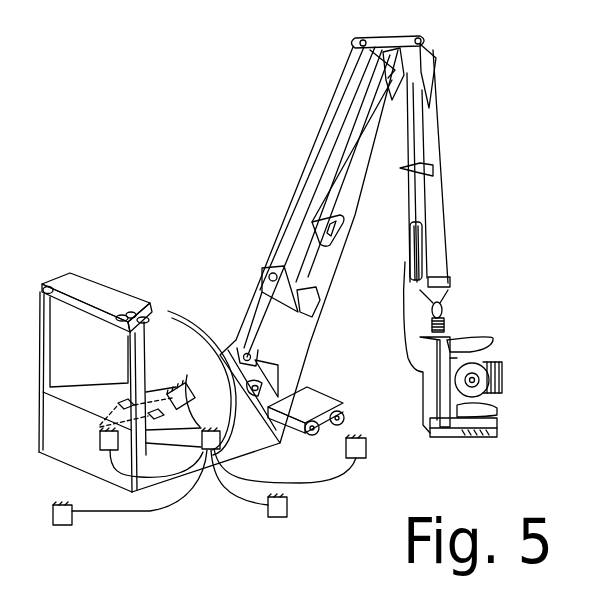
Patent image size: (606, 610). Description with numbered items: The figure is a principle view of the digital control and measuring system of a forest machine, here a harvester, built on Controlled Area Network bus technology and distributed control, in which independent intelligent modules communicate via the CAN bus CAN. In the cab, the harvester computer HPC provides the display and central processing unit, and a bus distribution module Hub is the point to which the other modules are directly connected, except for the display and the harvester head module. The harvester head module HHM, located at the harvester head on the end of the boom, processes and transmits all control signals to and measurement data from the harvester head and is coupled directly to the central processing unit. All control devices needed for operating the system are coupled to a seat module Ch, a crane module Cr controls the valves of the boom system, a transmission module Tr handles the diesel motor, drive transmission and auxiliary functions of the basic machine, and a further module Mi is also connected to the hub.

The harvester head module HHM is at (423, 370).
The CAN bus CAN is at (306, 421).
The seat module Ch is at (140, 452).
The Harvester PC HPC is at (173, 389).
The bus distribution module Hub is at (196, 439).
The crane module Cr is at (300, 459).
The measuring instrument module Mi is at (259, 483).
The transmission module Tr is at (120, 487).